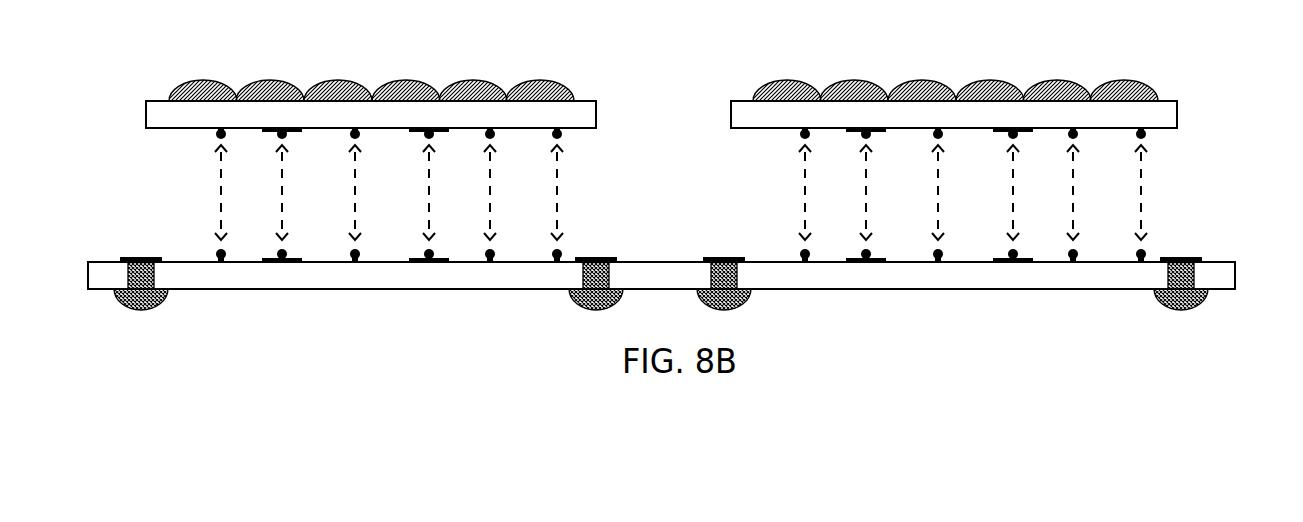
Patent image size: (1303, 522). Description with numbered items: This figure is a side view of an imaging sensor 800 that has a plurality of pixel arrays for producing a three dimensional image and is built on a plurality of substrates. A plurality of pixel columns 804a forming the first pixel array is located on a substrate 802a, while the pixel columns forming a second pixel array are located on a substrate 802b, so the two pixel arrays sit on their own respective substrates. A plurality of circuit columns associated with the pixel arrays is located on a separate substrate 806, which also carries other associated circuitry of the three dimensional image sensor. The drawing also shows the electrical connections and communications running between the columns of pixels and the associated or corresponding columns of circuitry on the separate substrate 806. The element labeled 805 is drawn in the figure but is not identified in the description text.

The stacked image sensor device 800 is at (1168, 212).
The first sensor chip (Chip1) 805 is at (163, 122).
The pixel array of first sensor chip 802b is at (258, 80).
The second sensor chip pixel array (Chip2) 802a is at (748, 122).
The microlens 804a is at (1143, 87).
The readout chip (Chip3) 806 is at (253, 277).